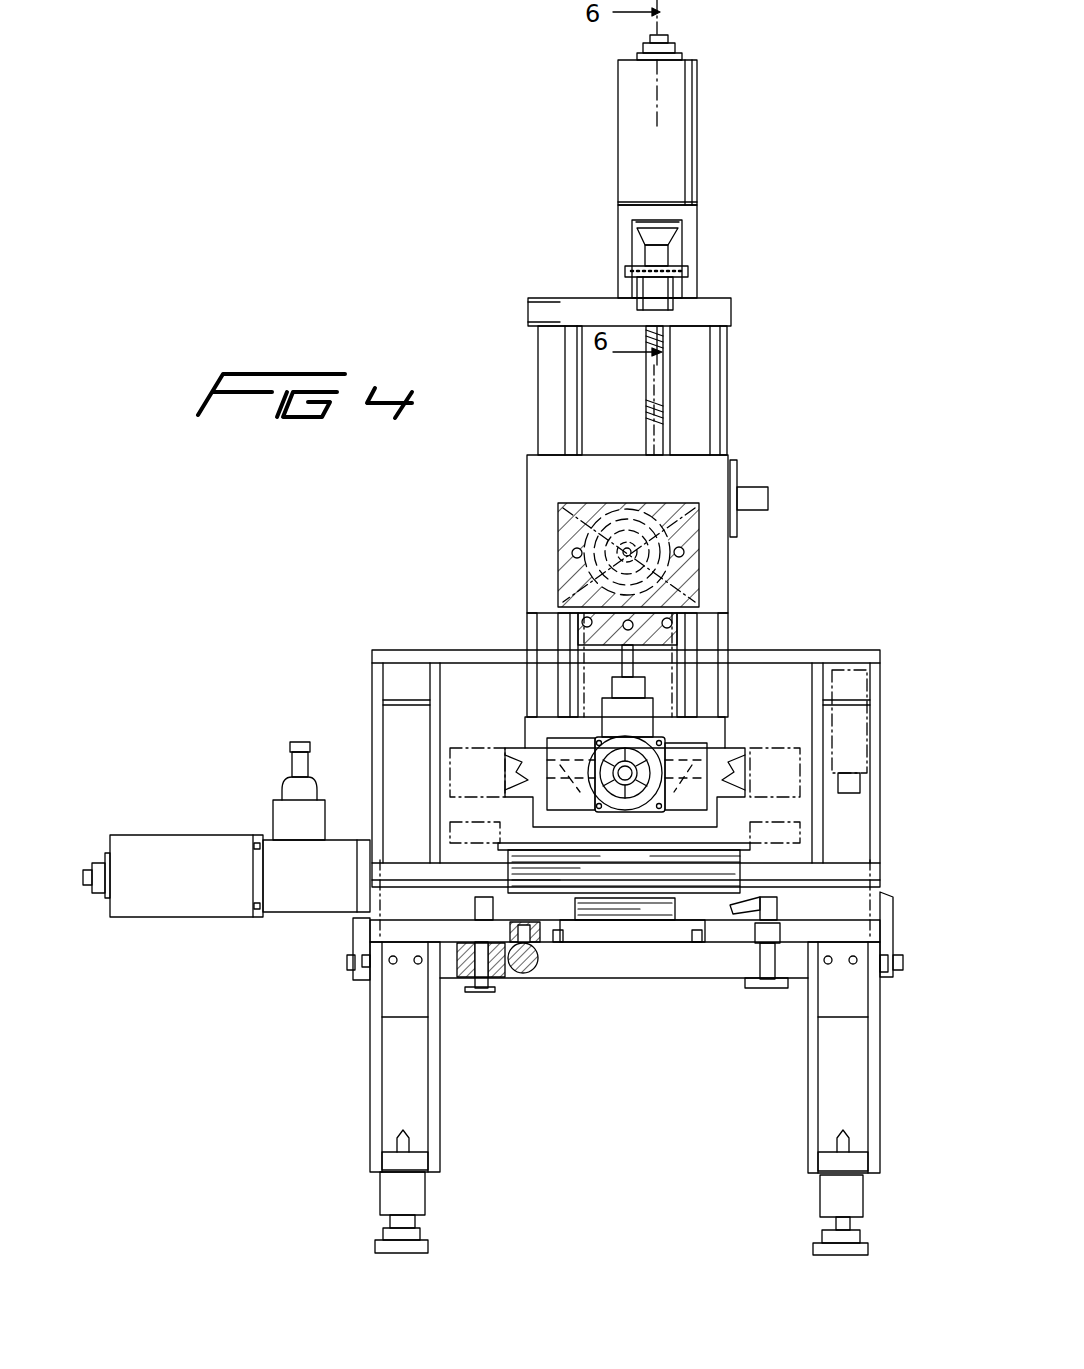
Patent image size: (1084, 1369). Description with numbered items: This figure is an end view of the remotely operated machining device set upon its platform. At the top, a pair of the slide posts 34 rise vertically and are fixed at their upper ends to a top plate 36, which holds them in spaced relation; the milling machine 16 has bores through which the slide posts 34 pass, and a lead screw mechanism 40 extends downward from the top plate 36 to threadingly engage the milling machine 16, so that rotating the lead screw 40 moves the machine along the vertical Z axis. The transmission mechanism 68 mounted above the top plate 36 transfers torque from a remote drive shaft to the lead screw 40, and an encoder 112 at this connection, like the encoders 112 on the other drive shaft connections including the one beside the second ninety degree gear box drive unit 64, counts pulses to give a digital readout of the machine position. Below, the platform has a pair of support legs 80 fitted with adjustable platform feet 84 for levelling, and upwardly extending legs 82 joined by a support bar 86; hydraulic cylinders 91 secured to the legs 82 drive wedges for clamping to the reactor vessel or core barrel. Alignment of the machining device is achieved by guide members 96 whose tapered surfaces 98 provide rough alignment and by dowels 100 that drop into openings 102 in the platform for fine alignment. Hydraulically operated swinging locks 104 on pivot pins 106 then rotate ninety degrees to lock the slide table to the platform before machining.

The milling machine 16 is at (540, 505).
The slide posts 34 is at (712, 375).
The top plate 36 is at (585, 300).
The lead screw mechanism 40 is at (665, 425).
The second 90 degree gear box drive unit 64 is at (325, 892).
The transmission mechanism 68 is at (660, 252).
The support legs 80 is at (420, 1095).
The upwardly and outwardly extending legs 82 is at (395, 740).
The adjustable platform feet 84 is at (412, 1200).
The support bar 86 is at (465, 670).
The hydraulic cylinders 91 is at (855, 740).
The guide members 96 is at (647, 920).
The tapered surfaces 98 is at (880, 895).
The dowels 100 is at (530, 968).
The openings 102 is at (513, 975).
The swinging locks 104 is at (478, 905).
The pins 106 is at (770, 893).
The encoders 112 is at (685, 140).